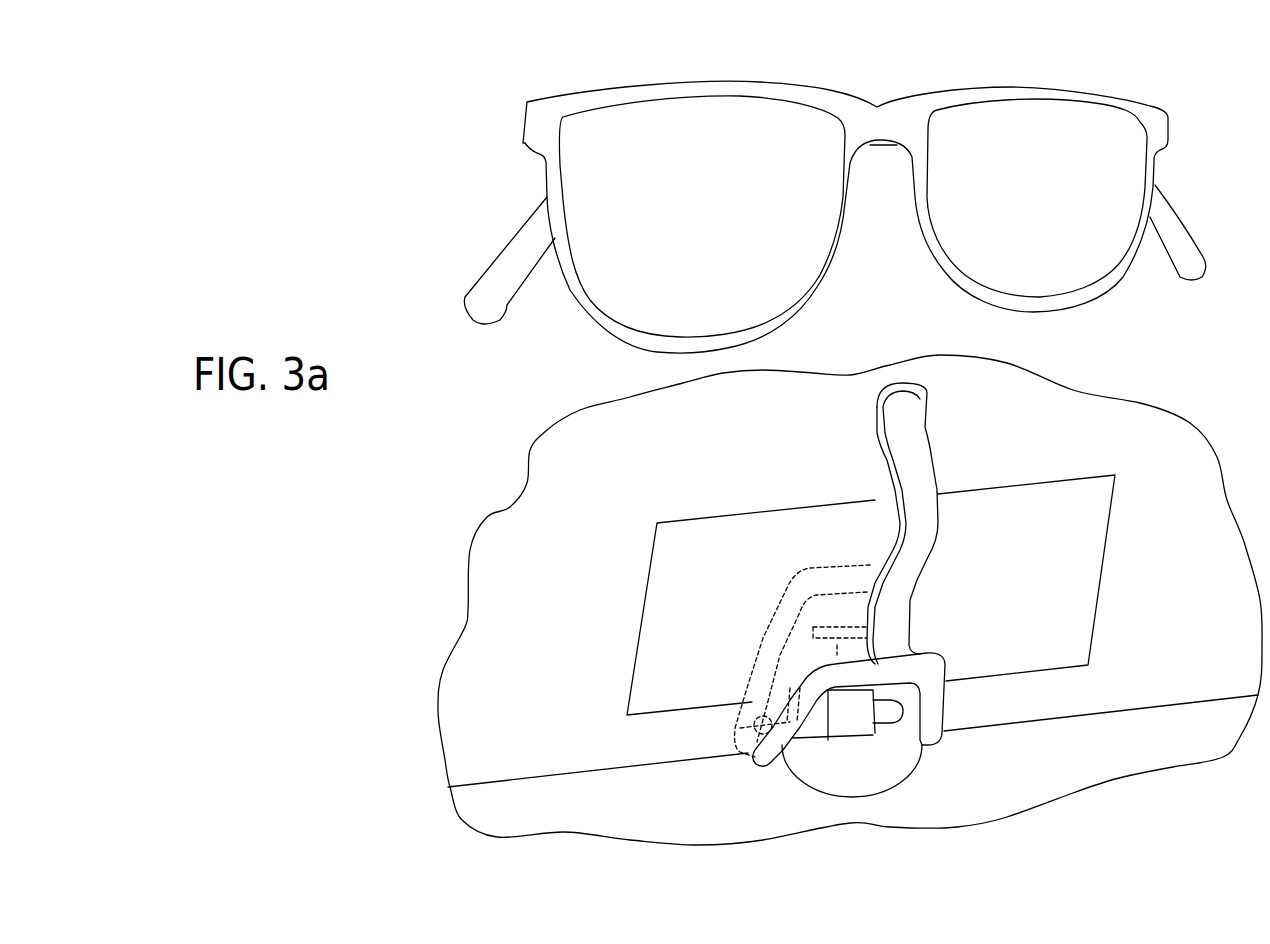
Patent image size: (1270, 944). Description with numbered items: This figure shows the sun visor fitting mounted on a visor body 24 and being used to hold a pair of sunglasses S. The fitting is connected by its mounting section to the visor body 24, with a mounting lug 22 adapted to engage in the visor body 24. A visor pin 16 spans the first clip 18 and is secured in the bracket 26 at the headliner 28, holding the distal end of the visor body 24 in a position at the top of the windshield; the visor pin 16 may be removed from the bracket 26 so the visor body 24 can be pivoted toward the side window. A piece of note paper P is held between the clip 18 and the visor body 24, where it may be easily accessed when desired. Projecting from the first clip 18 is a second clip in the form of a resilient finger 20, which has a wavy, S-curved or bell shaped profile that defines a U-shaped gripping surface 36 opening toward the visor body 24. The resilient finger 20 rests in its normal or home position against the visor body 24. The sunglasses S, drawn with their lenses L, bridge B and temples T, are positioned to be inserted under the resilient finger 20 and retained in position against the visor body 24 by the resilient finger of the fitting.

The sunglasses S is at (1047, 83).
The bridge B is at (882, 120).
The lens L is at (613, 173).
The temples T is at (890, 147).
The note paper P is at (1073, 557).
The visor pin 16 is at (828, 722).
The first clip 18 is at (930, 673).
The resilient finger 20 is at (895, 523).
The mounting lug 22 is at (800, 652).
The visor body 24 is at (645, 476).
The bracket 26 is at (868, 740).
The headliner 28 is at (1102, 753).
The U-shaped gripping surface 36 is at (895, 513).